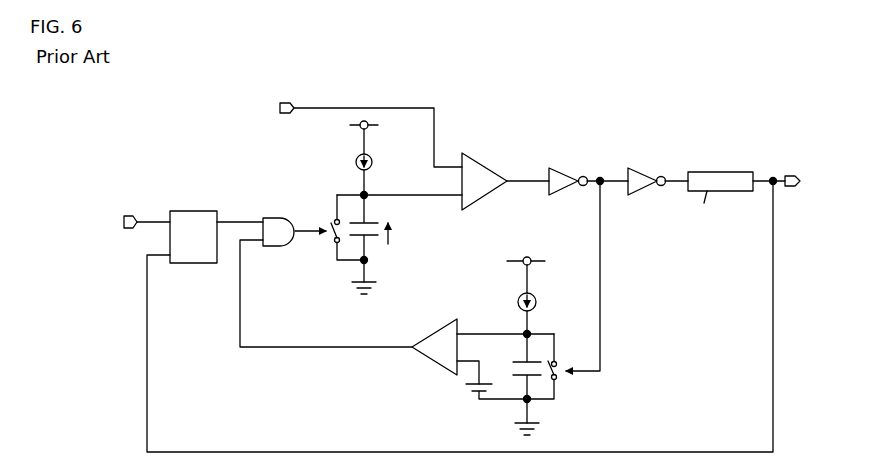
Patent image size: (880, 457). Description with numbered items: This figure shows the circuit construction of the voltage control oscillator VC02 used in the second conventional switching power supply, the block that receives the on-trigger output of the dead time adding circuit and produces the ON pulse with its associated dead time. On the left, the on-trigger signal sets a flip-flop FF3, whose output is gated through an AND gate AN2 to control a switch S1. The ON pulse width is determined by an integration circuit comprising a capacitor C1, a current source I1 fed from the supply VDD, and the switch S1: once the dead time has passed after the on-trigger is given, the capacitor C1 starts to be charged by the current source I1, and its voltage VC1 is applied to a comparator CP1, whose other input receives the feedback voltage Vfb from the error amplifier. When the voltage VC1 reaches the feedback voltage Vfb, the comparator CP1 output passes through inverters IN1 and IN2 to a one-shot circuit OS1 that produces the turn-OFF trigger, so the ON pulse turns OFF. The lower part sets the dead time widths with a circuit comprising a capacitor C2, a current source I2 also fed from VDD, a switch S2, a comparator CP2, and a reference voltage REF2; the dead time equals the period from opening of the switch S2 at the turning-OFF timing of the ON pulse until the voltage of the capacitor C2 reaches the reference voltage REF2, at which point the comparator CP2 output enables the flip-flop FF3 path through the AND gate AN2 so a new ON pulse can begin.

The voltage control oscillator VC02 is at (460, 234).
The feedback voltage Vfb is at (356, 133).
The flip-flop FF3 is at (191, 211).
The AND gate AN2 is at (294, 223).
The supply voltage VDD is at (351, 137).
The current source I1 is at (373, 174).
The switch S1 is at (340, 227).
The capacitor C1 is at (367, 244).
The voltage VC1 is at (403, 233).
The first comparator CP1 is at (505, 174).
The first inverter IN1 is at (588, 173).
The second inverter IN2 is at (658, 172).
The one-shot circuit OS1 is at (720, 172).
The current source I2 is at (526, 289).
The switch S2 is at (553, 366).
The capacitor C2 is at (522, 384).
The comparator CP2 is at (443, 351).
The reference voltage REF2 is at (478, 391).